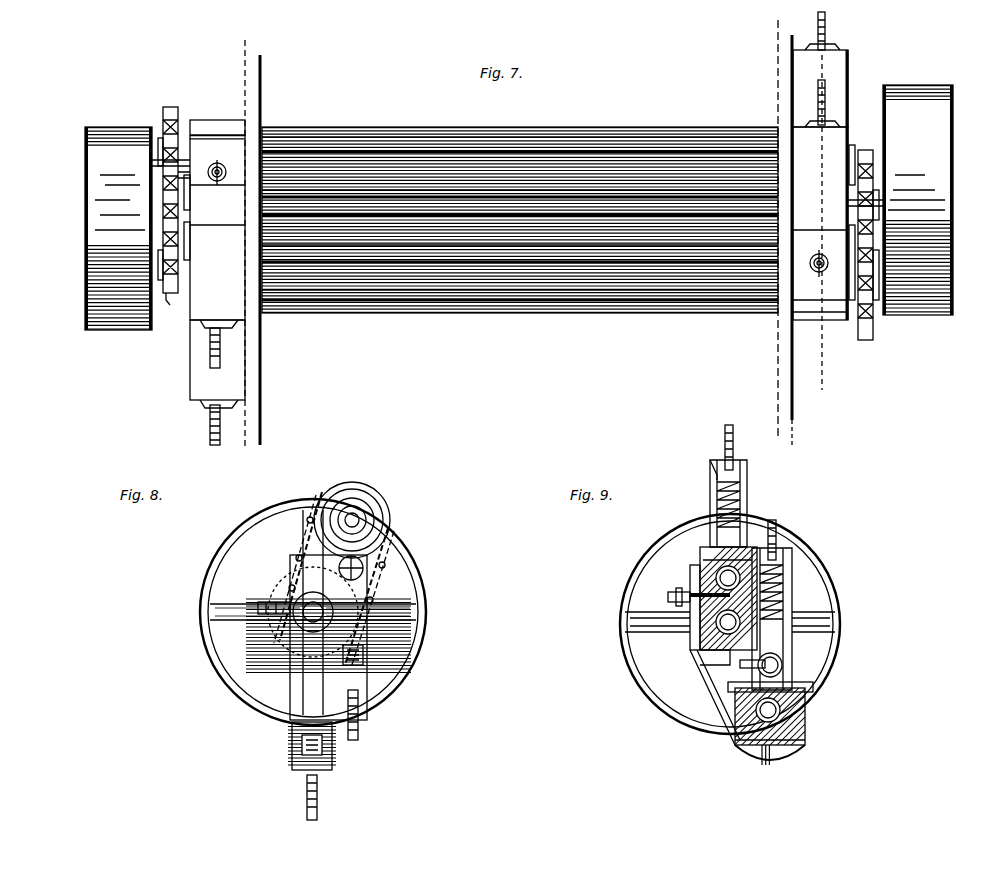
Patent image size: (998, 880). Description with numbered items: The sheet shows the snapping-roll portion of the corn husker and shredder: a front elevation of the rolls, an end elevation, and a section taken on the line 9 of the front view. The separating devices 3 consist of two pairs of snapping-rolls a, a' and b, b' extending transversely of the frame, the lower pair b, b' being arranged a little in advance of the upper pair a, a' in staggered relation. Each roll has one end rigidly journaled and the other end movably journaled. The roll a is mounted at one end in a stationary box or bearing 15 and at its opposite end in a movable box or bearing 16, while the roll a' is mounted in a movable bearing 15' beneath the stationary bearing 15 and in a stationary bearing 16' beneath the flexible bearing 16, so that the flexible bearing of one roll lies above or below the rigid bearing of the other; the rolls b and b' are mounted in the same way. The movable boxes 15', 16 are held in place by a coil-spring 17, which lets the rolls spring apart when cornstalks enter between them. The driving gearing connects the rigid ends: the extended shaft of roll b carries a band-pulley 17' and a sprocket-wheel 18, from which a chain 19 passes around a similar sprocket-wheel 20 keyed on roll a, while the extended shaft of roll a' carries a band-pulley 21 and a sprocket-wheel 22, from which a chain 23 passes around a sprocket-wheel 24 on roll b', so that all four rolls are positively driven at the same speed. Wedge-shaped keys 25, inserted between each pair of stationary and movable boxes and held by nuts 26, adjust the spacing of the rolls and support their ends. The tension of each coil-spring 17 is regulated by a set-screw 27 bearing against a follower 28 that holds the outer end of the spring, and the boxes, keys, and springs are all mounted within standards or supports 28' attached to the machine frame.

In FIG. 7, the separating devices 3 is at (520, 209).
In FIG. 7, the snapping-roll a is at (520, 118).
In FIG. 8, the snapping-roll a is at (361, 517).
In FIG. 9, the snapping-roll a is at (693, 568).
In FIG. 7, the snapping-roll a' is at (520, 144).
In FIG. 8, the snapping-roll a' is at (372, 574).
In FIG. 9, the snapping-roll a' is at (686, 642).
In FIG. 7, the snapping-roll b is at (520, 299).
In FIG. 8, the snapping-roll b is at (275, 659).
In FIG. 9, the snapping-roll b is at (814, 678).
In FIG. 7, the snapping-roll b' is at (520, 321).
In FIG. 8, the snapping-roll b' is at (268, 710).
In FIG. 9, the snapping-roll b' is at (809, 711).
In FIG. 7, the section line 9 is at (809, 205).
In FIG. 7, the stationary box or bearing 15 is at (217, 203).
In FIG. 7, the movable bearing 15' is at (199, 217).
In FIG. 7, the movable box or bearing 16 is at (845, 85).
In FIG. 9, the movable box or bearing 16 is at (705, 642).
In FIG. 9, the stationary bearing 16' is at (695, 667).
In FIG. 8, the coil-spring 17 is at (344, 707).
In FIG. 9, the coil-spring 17 is at (778, 575).
In FIG. 7, the band-pulley 17' is at (101, 228).
In FIG. 8, the band-pulley 17' is at (288, 612).
In FIG. 7, the sprocket-wheel 18 is at (169, 307).
In FIG. 8, the sprocket-wheel 18 is at (288, 588).
In FIG. 7, the chain 19 is at (165, 200).
In FIG. 8, the chain 19 is at (296, 558).
In FIG. 7, the sprocket-wheel 20 is at (170, 107).
In FIG. 8, the sprocket-wheel 20 is at (385, 520).
In FIG. 7, the band-pulley 21 is at (935, 195).
In FIG. 9, the band-pulley 21 is at (815, 612).
In FIG. 7, the sprocket-wheel 22 is at (873, 172).
In FIG. 9, the sprocket-wheel 22 is at (668, 636).
In FIG. 7, the chain 23 is at (873, 240).
In FIG. 9, the chain 23 is at (700, 690).
In FIG. 7, the sprocket-wheel 24 is at (868, 330).
In FIG. 9, the sprocket-wheel 24 is at (805, 742).
In FIG. 7, the wedge-shaped key 25 is at (225, 160).
In FIG. 8, the wedge-shaped key 25 is at (262, 614).
In FIG. 9, the wedge-shaped key 25 is at (792, 585).
In FIG. 7, the nut 26 is at (222, 180).
In FIG. 8, the nut 26 is at (305, 618).
In FIG. 9, the nut 26 is at (676, 592).
In FIG. 7, the set-screw 27 is at (212, 340).
In FIG. 8, the set-screw 27 is at (358, 720).
In FIG. 9, the set-screw 27 is at (733, 445).
In FIG. 9, the follower 28 is at (788, 571).
In FIG. 7, the standard or support 28' is at (495, 229).
In FIG. 8, the standard or support 28' is at (387, 637).
In FIG. 9, the standard or support 28' is at (809, 698).